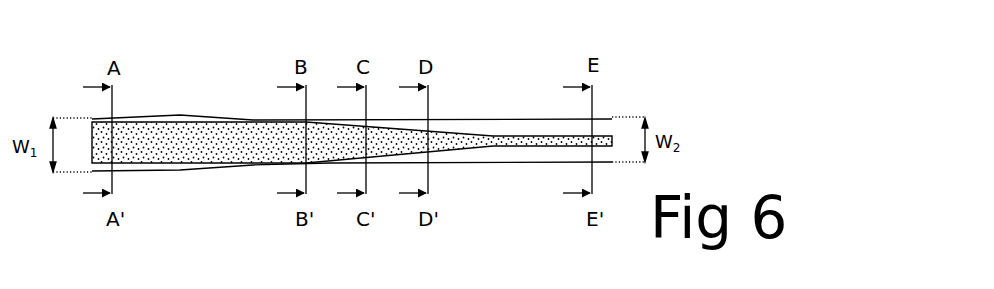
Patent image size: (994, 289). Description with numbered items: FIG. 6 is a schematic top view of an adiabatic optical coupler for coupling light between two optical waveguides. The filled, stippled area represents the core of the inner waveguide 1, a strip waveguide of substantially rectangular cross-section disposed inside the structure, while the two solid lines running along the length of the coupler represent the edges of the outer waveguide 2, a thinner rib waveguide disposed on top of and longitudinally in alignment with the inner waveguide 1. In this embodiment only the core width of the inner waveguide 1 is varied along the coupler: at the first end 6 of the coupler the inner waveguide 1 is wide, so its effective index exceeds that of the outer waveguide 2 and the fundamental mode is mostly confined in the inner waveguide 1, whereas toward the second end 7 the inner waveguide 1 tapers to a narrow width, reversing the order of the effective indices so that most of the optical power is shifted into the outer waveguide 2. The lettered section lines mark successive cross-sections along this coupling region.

The inner waveguide 1 is at (447, 136).
The outer waveguide 2 is at (498, 128).
The first end of the coupler 6 is at (88, 69).
The second end of the coupler 7 is at (599, 47).